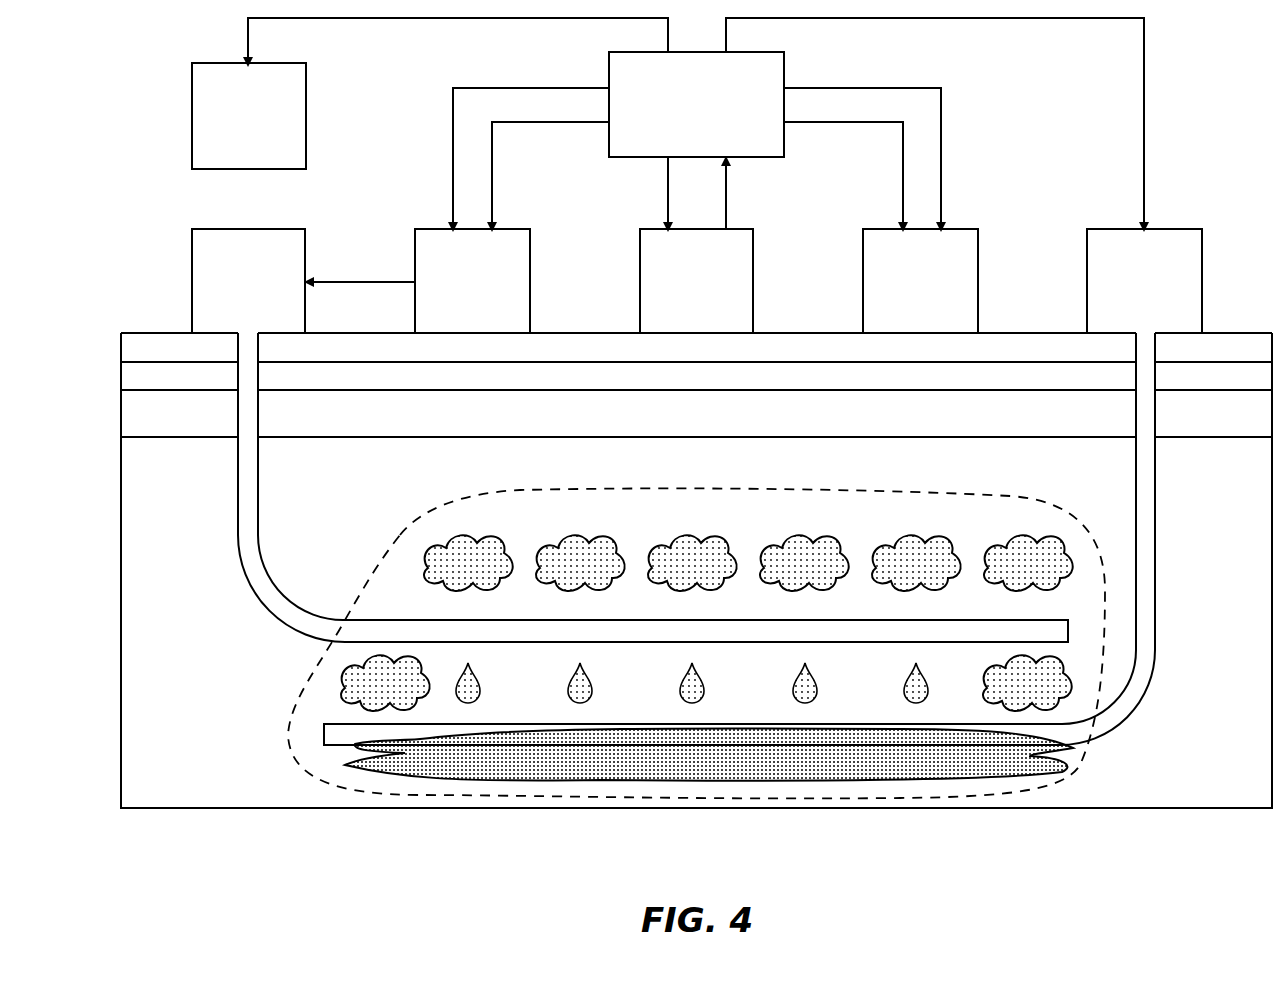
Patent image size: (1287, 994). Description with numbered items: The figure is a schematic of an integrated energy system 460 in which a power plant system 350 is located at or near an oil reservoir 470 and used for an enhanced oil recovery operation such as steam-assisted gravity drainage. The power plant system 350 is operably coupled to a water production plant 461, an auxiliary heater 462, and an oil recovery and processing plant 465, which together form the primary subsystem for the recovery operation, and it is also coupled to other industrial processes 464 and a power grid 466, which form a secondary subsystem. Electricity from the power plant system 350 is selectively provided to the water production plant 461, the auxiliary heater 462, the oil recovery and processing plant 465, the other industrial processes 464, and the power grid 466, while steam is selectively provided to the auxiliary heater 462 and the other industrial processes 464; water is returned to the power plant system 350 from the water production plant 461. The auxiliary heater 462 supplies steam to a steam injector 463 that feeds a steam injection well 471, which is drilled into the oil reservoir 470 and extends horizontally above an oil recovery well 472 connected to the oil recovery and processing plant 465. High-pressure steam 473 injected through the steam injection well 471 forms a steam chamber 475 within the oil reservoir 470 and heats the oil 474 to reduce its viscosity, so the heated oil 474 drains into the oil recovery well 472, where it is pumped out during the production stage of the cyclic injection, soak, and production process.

The power plant system 350 is at (696, 104).
The integrated energy system 460 is at (1208, 176).
The water production plant 461 is at (696, 281).
The auxiliary heater 462 is at (472, 281).
The steam injector 463 is at (248, 281).
The other industrial processes 464 is at (920, 281).
The oil recovery and processing plant 465 is at (1144, 281).
The power grid 466 is at (249, 116).
The oil reservoir 470 is at (696, 570).
The steam injection well 471 is at (238, 509).
The oil recovery well 472 is at (1155, 508).
The steam 473 is at (563, 565).
The oil 474 is at (806, 696).
The steam chamber 475 is at (396, 535).